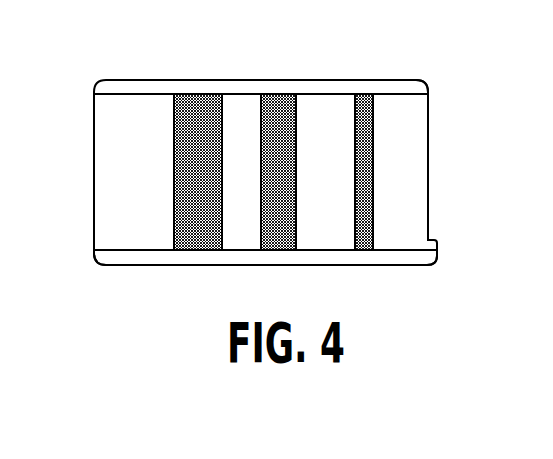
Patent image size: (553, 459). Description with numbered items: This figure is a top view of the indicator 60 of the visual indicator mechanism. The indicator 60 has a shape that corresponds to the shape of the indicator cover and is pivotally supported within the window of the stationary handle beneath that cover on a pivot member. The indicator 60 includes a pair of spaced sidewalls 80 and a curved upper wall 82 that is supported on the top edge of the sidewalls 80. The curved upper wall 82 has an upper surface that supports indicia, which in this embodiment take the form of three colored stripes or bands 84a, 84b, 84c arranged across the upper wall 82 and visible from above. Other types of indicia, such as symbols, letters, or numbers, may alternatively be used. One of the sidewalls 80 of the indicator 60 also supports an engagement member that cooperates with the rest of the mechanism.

The indicator 60 is at (143, 70).
The sidewalls 80 is at (402, 77).
The curved upper wall 82 is at (410, 181).
The colored stripe 84a is at (365, 132).
The colored stripe 84b is at (277, 103).
The colored stripe 84c is at (191, 102).